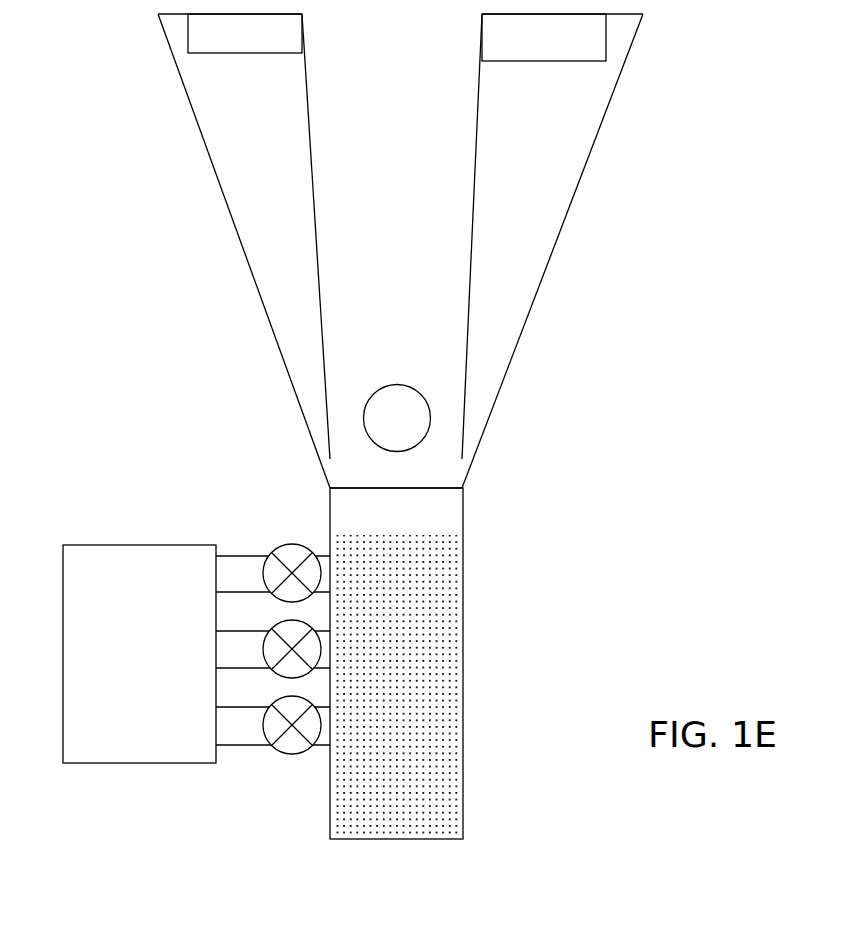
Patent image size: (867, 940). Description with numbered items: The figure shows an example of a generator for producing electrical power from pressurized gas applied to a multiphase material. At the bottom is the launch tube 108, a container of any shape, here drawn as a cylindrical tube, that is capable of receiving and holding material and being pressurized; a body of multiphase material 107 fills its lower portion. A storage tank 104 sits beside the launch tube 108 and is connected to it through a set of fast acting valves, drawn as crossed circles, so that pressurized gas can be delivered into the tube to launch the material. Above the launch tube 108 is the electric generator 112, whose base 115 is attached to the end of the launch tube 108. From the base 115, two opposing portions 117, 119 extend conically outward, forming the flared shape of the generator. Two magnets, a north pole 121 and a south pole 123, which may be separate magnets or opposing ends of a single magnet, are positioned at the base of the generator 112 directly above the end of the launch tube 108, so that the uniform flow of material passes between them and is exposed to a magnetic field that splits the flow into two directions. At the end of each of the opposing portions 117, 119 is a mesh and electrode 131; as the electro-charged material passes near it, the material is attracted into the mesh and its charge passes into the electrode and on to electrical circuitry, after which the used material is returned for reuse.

The storage tank 104 is at (139, 654).
The multiphase material 107 is at (368, 763).
The launch tube 108 is at (464, 718).
The electric generator 112 is at (415, 251).
The base 115 is at (307, 482).
The first opposing portion 117 is at (187, 101).
The second opposing portion 119 is at (633, 107).
The north pole magnet 121 is at (390, 355).
The south pole magnet 123 is at (387, 368).
The mesh and electrode 131 is at (490, 33).